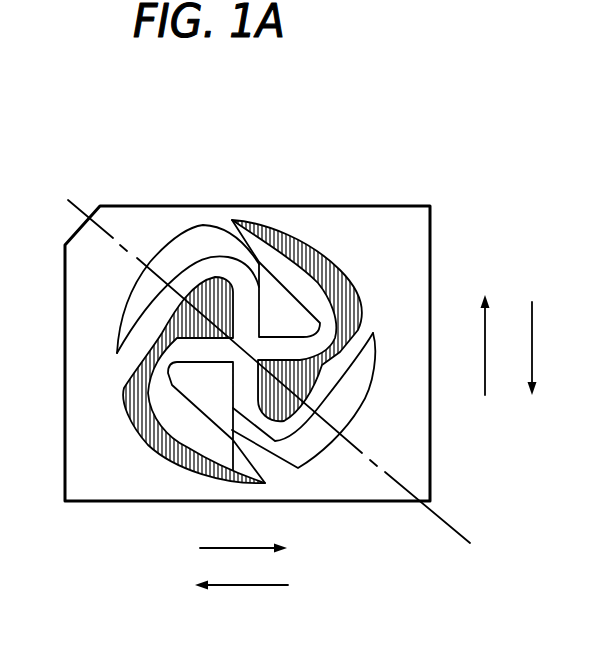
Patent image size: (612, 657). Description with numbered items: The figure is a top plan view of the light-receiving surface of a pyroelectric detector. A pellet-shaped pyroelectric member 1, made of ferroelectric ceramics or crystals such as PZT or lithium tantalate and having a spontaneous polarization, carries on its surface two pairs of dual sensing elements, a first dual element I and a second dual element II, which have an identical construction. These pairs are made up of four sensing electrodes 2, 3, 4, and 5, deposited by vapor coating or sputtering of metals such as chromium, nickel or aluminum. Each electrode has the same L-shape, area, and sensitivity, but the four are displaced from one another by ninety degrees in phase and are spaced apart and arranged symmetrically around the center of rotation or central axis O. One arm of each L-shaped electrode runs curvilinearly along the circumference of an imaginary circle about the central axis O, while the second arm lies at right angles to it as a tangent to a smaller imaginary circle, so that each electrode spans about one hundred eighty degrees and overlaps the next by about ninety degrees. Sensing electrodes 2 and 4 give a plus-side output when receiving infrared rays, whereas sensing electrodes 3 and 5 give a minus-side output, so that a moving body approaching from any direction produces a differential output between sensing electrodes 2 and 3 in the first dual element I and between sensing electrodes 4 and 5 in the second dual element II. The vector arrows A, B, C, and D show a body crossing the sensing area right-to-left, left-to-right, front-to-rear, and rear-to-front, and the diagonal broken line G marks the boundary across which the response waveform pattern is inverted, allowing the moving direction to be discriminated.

The pyroelectric member 1 is at (70, 282).
The sensing electrode 2 is at (362, 266).
The sensing electrode 3 is at (380, 348).
The sensing electrode 4 is at (208, 258).
The sensing electrode 5 is at (278, 310).
The first dual element I is at (483, 143).
The second dual element II is at (207, 137).
The vector arrow A is at (217, 548).
The vector arrow B is at (243, 585).
The vector arrow C is at (483, 348).
The vector arrow D is at (533, 340).
The central axis O is at (235, 470).
The broken line G is at (433, 510).